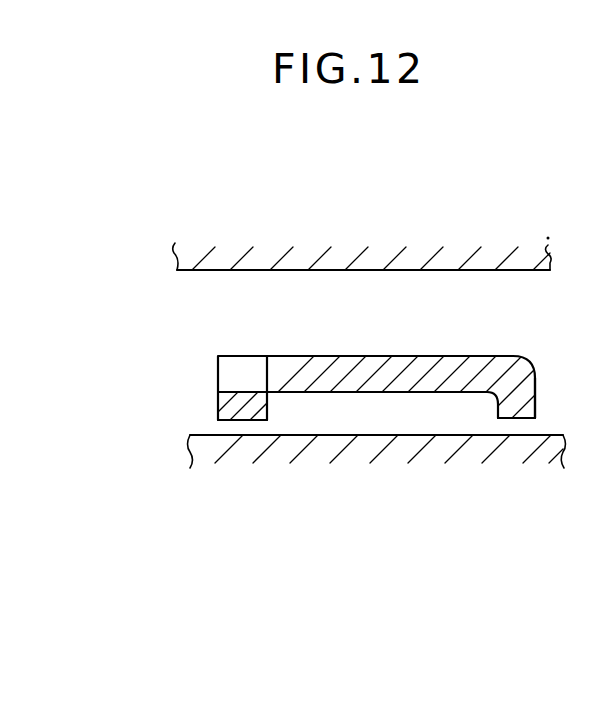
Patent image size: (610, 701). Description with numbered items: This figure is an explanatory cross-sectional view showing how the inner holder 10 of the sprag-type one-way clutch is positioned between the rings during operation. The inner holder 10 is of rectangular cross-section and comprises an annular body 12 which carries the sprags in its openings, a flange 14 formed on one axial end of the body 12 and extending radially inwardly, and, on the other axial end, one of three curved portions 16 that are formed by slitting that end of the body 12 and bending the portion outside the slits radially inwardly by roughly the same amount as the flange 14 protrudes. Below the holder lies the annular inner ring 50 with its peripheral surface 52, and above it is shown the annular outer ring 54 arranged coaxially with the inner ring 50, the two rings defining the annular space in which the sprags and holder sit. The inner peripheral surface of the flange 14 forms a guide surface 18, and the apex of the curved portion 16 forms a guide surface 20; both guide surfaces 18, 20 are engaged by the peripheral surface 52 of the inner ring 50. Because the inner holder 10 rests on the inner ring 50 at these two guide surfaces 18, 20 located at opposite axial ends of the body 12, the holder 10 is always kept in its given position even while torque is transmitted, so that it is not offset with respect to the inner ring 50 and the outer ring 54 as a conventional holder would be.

The inner holder 10 is at (532, 343).
The annular body 12 is at (444, 357).
The flange 14 is at (517, 399).
The curved portion 16 is at (228, 404).
The guide surface 18 is at (520, 418).
The guide surface 20 is at (247, 420).
The inner ring 50 is at (350, 563).
The peripheral surface 52 is at (353, 435).
The outer ring 54 is at (428, 247).